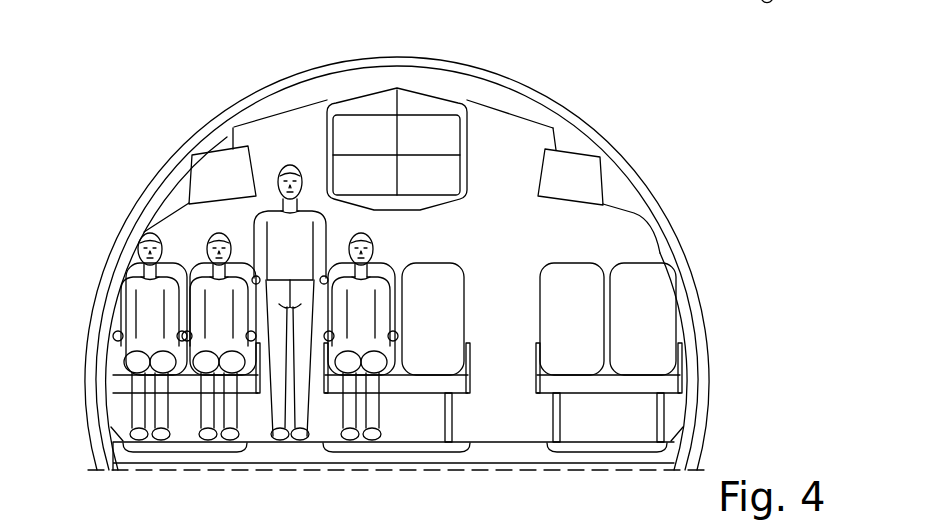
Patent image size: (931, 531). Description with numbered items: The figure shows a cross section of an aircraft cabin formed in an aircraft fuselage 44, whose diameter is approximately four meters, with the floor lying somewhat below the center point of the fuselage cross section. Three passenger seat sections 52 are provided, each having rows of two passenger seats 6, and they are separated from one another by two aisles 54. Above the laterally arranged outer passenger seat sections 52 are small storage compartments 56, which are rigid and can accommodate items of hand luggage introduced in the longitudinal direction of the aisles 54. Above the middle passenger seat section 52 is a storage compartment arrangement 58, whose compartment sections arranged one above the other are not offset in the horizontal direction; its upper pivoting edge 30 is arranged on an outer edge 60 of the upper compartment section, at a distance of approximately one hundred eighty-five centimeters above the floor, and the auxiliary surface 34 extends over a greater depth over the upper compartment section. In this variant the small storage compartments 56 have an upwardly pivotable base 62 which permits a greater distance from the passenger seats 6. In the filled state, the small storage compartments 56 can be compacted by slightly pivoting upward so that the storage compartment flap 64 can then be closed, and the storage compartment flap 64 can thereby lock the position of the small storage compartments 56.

The passenger seat 6 is at (446, 293).
The upper pivoting edge 30 is at (329, 122).
The auxiliary surface 34 is at (378, 103).
The aircraft fuselage 44 is at (153, 178).
The passenger seat section 52 is at (187, 452).
The aisle 54 is at (494, 411).
The small storage compartment 56 is at (228, 172).
The storage compartment arrangement 58 is at (433, 105).
The outer edge 60 is at (335, 137).
The upwardly pivotable base 62 is at (216, 204).
The storage compartment flap 64 is at (254, 173).